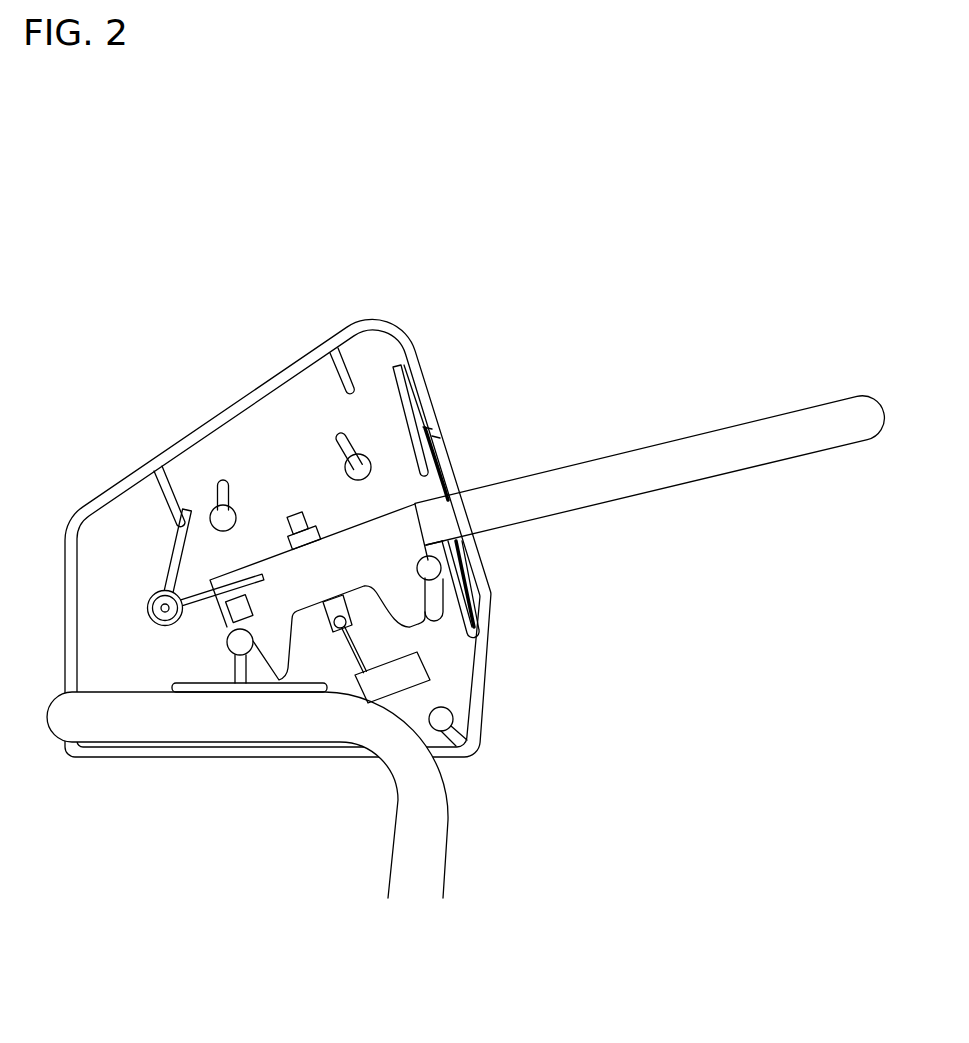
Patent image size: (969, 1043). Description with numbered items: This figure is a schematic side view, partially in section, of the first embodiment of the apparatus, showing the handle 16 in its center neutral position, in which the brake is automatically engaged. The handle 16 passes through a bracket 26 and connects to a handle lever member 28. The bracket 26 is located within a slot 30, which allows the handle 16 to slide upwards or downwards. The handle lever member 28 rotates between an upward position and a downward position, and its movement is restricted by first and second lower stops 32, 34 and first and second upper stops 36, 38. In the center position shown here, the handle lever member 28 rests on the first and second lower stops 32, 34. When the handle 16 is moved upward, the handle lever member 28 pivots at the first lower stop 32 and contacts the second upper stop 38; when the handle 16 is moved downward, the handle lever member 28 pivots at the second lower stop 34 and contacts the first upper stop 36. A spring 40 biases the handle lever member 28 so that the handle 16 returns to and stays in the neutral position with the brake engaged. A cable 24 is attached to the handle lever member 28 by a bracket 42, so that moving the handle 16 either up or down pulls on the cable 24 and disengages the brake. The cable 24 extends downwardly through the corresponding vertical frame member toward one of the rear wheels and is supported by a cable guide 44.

The handle 16 is at (768, 417).
The cable 24 is at (355, 648).
The bracket 26 is at (432, 463).
The handle lever member 28 is at (416, 506).
The slot 30 is at (412, 392).
The first lower stop 32 is at (235, 655).
The second lower stop 34 is at (440, 580).
The first upper stop 36 is at (213, 507).
The second upper stop 38 is at (362, 455).
The spring 40 is at (160, 550).
The bracket 42 is at (338, 630).
The cable guide 44 is at (367, 690).